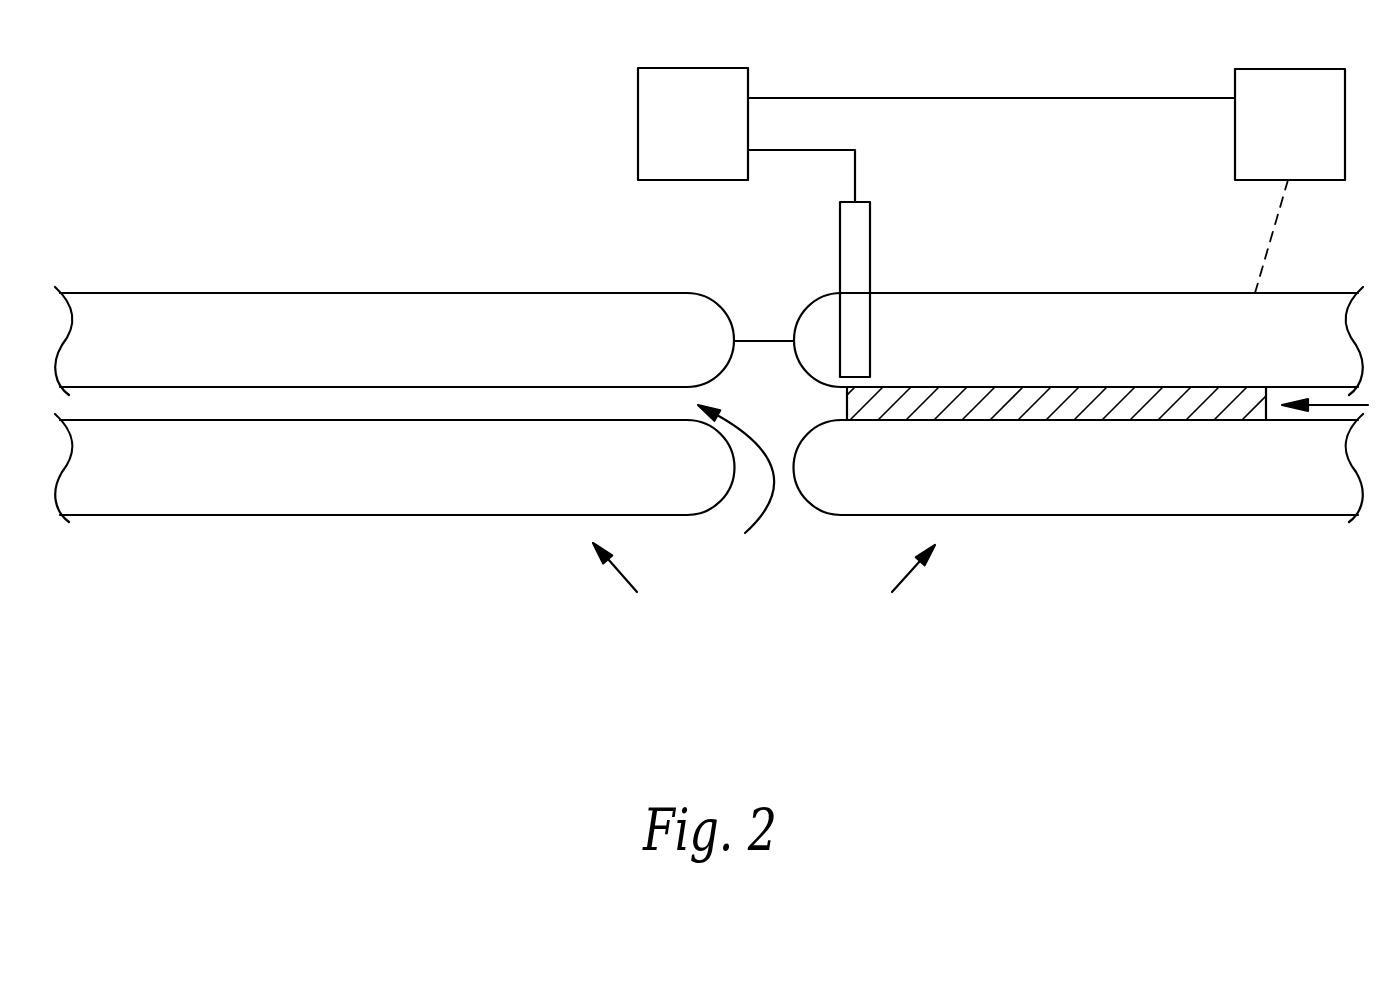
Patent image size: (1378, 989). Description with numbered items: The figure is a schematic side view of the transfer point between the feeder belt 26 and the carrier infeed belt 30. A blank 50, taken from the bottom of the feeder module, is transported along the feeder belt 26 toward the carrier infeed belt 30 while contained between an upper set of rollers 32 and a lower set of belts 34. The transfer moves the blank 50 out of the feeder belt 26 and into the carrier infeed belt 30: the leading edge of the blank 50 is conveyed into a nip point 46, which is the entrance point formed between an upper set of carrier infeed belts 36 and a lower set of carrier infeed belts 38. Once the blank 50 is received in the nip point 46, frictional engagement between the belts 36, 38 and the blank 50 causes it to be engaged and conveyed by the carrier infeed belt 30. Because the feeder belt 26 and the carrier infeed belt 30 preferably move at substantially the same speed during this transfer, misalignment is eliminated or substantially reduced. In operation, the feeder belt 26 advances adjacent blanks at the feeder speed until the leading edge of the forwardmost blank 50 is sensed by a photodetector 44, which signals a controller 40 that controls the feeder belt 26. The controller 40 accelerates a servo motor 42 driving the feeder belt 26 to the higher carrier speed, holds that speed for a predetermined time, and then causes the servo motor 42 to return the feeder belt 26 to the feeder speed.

The feeder belt 26 is at (903, 585).
The carrier infeed belt 30 is at (628, 584).
The upper set of rollers 32 is at (1100, 293).
The lower set of belts 34 is at (1100, 515).
The upper set of carrier infeed belts 36 is at (359, 293).
The lower set of carrier infeed belts 38 is at (375, 515).
The controller 40 is at (677, 142).
The servo motor 42 is at (1292, 68).
The photodetector 44 is at (862, 243).
The nip point 46 is at (736, 478).
The blank 50 is at (847, 401).